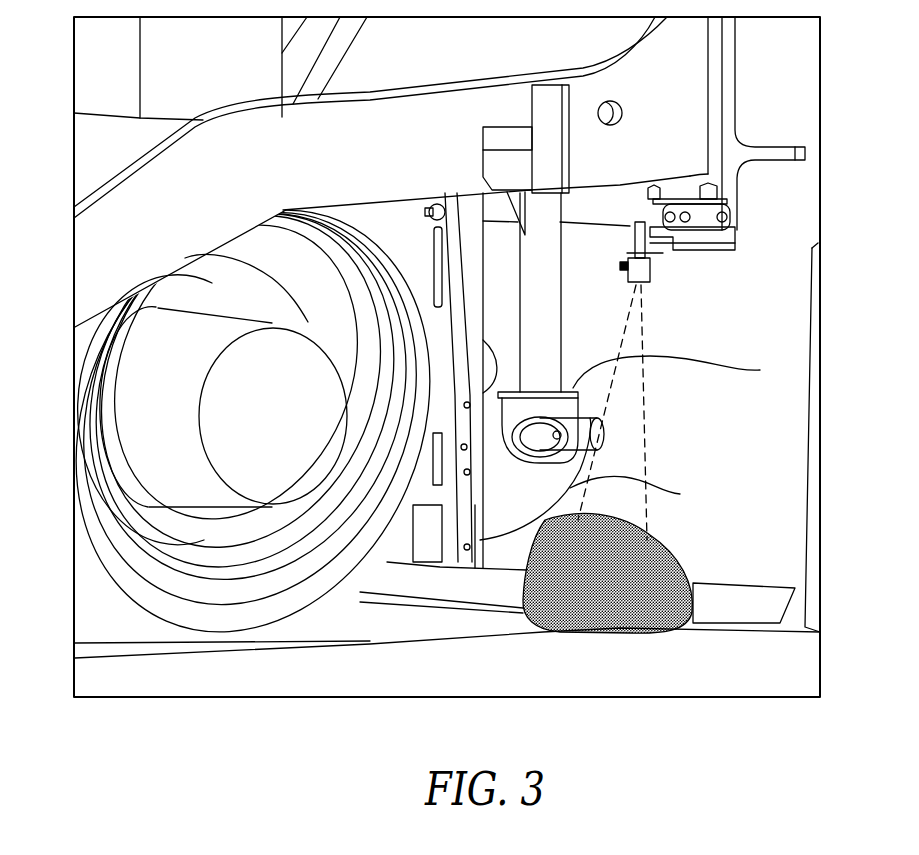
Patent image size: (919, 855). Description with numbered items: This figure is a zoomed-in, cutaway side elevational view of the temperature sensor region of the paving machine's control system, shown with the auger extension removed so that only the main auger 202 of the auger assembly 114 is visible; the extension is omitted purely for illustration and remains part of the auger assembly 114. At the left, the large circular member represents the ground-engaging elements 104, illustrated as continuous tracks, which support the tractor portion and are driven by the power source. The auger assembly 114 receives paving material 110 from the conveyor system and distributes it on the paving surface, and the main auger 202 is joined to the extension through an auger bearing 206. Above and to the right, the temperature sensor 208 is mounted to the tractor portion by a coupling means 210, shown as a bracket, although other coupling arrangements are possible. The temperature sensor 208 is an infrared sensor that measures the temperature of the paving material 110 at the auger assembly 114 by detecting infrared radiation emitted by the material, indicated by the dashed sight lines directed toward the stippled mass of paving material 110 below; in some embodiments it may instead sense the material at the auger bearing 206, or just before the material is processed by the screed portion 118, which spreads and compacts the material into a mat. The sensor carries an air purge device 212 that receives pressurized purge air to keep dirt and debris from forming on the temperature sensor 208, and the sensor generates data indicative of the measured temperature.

The ground-engaging elements 104 is at (232, 668).
The paving material 110 is at (663, 570).
The auger assembly 114 is at (520, 548).
The screed portion 118 is at (745, 602).
The main auger 202 is at (680, 494).
The auger bearing 206 is at (760, 370).
The temperature sensor 208 is at (727, 197).
The coupling means 210 is at (673, 222).
The air purge device 212 is at (653, 248).